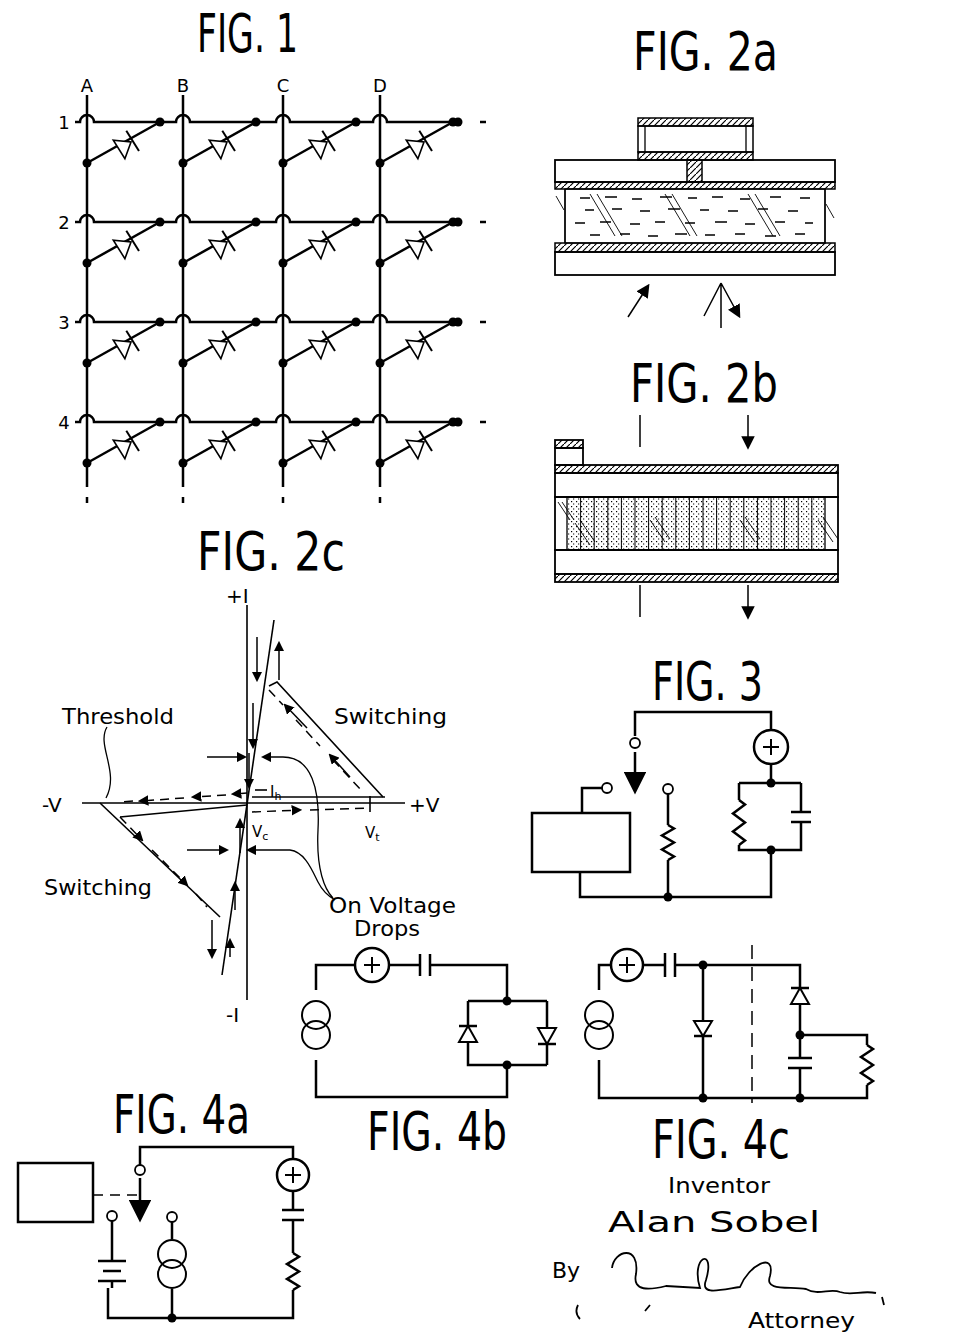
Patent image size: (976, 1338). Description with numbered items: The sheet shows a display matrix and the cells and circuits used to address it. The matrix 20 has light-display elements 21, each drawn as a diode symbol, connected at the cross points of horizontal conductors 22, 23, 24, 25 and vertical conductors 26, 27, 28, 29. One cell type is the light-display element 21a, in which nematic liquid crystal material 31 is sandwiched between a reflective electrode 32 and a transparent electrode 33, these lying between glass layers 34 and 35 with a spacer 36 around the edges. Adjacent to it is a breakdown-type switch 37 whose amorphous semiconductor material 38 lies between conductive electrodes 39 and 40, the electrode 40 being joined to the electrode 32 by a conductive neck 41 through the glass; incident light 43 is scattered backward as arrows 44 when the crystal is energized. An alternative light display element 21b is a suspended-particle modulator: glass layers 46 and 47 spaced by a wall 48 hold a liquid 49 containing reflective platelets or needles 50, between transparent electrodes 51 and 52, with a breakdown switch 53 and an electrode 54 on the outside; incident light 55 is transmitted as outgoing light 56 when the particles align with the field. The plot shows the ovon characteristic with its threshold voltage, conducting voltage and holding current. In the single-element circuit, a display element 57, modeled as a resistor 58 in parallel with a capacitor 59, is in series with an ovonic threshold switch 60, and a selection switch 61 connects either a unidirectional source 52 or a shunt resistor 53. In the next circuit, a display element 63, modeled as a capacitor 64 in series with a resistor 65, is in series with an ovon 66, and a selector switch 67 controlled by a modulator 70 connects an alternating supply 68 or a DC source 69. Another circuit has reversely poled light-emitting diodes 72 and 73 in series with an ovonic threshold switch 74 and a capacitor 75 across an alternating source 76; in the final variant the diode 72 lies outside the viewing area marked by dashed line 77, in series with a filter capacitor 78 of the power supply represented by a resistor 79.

In FIG. 1, the matrix 20 is at (358, 82).
In FIG. 1, the light-display element 21 is at (437, 278).
In FIG. 1, the horizontal electrical conductor 22 is at (84, 128).
In FIG. 1, the horizontal electrical conductor 23 is at (84, 228).
In FIG. 1, the horizontal electrical conductor 24 is at (84, 328).
In FIG. 1, the horizontal electrical conductor 25 is at (84, 428).
In FIG. 1, the vertical electrical conductor 26 is at (94, 116).
In FIG. 1, the vertical electrical conductor 27 is at (190, 116).
In FIG. 1, the vertical electrical conductor 28 is at (290, 116).
In FIG. 1, the vertical electrical conductor 29 is at (387, 116).
In FIG. 2A, the light-display element 21a is at (696, 209).
In FIG. 2A, the nematic liquid crystal material 31 is at (810, 218).
In FIG. 2A, the electrode 32 is at (800, 180).
In FIG. 2A, the electrode 33 is at (781, 252).
In FIG. 2A, the glass layer 34 is at (828, 176).
In FIG. 2A, the glass layer 35 is at (560, 258).
In FIG. 2A, the spacer 36 is at (558, 215).
In FIG. 2A, the breakdown-type switch 37 is at (711, 118).
In FIG. 2A, the amorphous semiconductor material 38 is at (753, 138).
In FIG. 2A, the conductive electrode 39 is at (665, 118).
In FIG. 2A, the conductive electrode 40 is at (755, 155).
In FIG. 2A, the conductive neck 41 is at (687, 170).
In FIG. 2A, the light 43 is at (635, 300).
In FIG. 2A, the arrows 44 is at (726, 308).
In FIG. 2B, the light display element 21b is at (684, 507).
In FIG. 2B, the glass layer 46 is at (830, 489).
In FIG. 2B, the glass layer 47 is at (830, 563).
In FIG. 2B, the wall 48 is at (840, 523).
In FIG. 2B, the liquid or semi-liquid plastic 49 is at (590, 540).
In FIG. 2B, the reflective platelets or needles 50 is at (760, 538).
In FIG. 2B, the transparent electrode 51 is at (820, 470).
In FIG. 2B, the transparent electrode 52 is at (828, 584).
In FIG. 3, the transparent electrode 52 is at (552, 813).
In FIG. 2B, the breakdown switch 53 is at (576, 460).
In FIG. 3, the breakdown switch 53 is at (671, 845).
In FIG. 2B, the electrode 54 is at (567, 440).
In FIG. 2B, the incident light 55 is at (746, 418).
In FIG. 2B, the outgoing light 56 is at (642, 590).
In FIG. 3, the display element 57 is at (777, 836).
In FIG. 3, the resistor 58 is at (737, 812).
In FIG. 3, the capacitor 59 is at (810, 822).
In FIG. 3, the ovonic threshold switch 60 is at (753, 743).
In FIG. 3, the selection switch 61 is at (630, 747).
In FIG. 4A, the display element 63 is at (297, 1245).
In FIG. 4A, the capacitor 64 is at (282, 1208).
In FIG. 4A, the resistor 65 is at (316, 1281).
In FIG. 4A, the ovon 66 is at (277, 1170).
In FIG. 4A, the selector switch 67 is at (146, 1196).
In FIG. 4A, the alternating potential supply 68 is at (182, 1245).
In FIG. 4A, the DC potential source 69 is at (100, 1273).
In FIG. 4A, the modulator 70 is at (53, 1163).
In FIG. 4B, the light-emitting diode 72 is at (546, 1032).
In FIG. 4C, the light-emitting diode 72 is at (811, 994).
In FIG. 4B, the light-emitting diode 73 is at (462, 1036).
In FIG. 4C, the light-emitting diode 73 is at (697, 1030).
In FIG. 4B, the ovonic threshold switch 74 is at (382, 980).
In FIG. 4C, the ovonic threshold switch 74 is at (617, 953).
In FIG. 4B, the capacitor 75 is at (432, 972).
In FIG. 4C, the capacitor 75 is at (672, 953).
In FIG. 4B, the alternating potential source 76 is at (331, 1030).
In FIG. 4C, the alternating potential source 76 is at (614, 1012).
In FIG. 4C, the dashed line 77 is at (756, 955).
In FIG. 4C, the filter capacitor 78 is at (790, 1060).
In FIG. 4C, the resistor 79 is at (874, 1062).